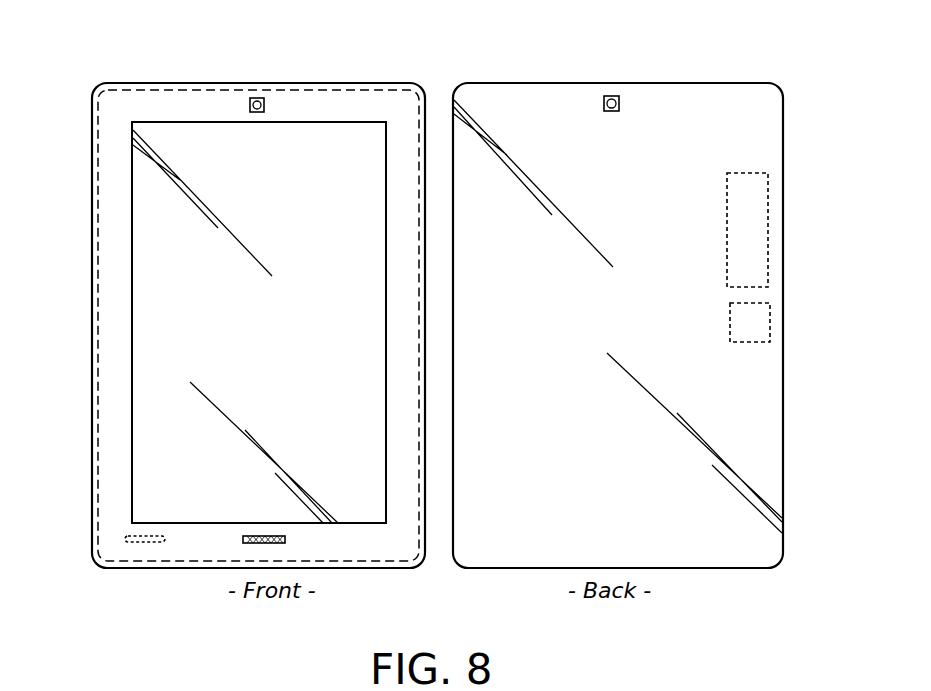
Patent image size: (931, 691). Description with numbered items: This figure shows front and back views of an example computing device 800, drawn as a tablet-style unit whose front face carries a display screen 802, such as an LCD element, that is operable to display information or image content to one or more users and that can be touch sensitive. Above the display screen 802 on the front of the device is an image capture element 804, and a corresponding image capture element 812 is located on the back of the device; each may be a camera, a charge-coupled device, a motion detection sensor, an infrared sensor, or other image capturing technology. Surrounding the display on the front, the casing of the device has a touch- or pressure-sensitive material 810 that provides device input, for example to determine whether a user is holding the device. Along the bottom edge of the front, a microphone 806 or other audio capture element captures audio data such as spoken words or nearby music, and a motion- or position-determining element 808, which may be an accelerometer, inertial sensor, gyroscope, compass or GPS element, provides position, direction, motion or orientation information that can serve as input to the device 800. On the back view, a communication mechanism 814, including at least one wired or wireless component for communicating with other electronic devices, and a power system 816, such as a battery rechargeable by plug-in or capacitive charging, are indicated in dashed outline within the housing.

The computing device 800 is at (829, 90).
The display screen 802 is at (130, 238).
The image capture element 804 is at (253, 98).
The microphone 806 is at (272, 543).
The motion- or position-determining element 808 is at (140, 543).
The touch- or pressure-sensitive material 810 is at (96, 387).
The image capture element 812 is at (610, 96).
The communication mechanism 814 is at (770, 248).
The power system 816 is at (770, 323).